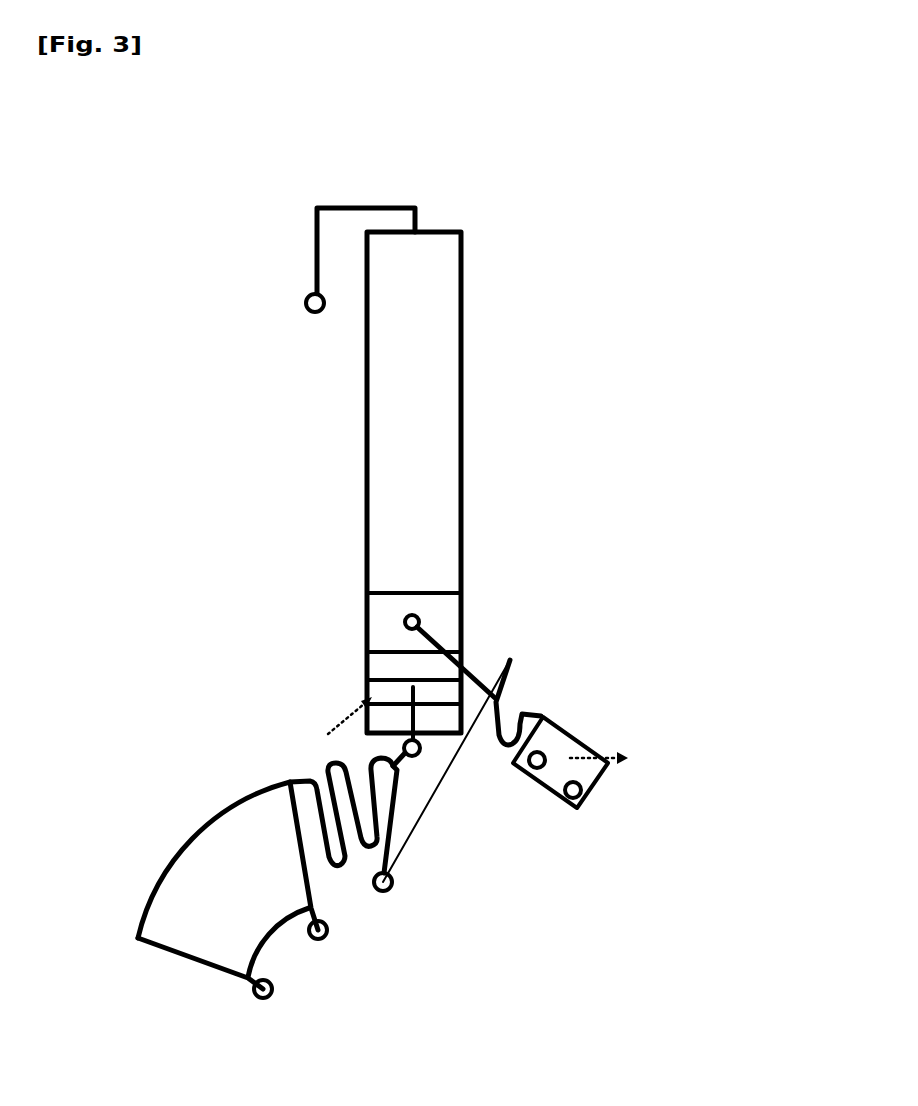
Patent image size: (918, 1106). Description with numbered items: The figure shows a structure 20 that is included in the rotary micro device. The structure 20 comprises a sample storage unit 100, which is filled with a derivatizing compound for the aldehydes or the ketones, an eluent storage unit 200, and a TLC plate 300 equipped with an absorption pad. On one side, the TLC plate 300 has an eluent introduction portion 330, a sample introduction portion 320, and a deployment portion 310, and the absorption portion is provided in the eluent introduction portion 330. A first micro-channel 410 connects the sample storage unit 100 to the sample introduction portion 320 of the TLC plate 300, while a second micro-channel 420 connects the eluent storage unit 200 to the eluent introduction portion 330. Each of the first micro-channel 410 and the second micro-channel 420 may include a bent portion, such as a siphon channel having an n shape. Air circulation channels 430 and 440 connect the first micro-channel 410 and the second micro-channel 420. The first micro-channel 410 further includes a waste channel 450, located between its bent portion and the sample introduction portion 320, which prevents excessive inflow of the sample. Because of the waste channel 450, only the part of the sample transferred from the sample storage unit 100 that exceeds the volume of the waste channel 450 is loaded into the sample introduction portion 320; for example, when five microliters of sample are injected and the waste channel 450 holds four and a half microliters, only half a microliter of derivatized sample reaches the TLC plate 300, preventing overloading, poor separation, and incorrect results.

The structure 20 is at (800, 188).
The sample storage unit 100 is at (605, 790).
The eluent storage unit 200 is at (163, 868).
The TLC plate 300 is at (245, 436).
The deployment portion 310 is at (350, 445).
The sample introduction portion 320 is at (350, 619).
The eluent introduction portion 330 is at (350, 691).
The first micro-channel 410 is at (523, 703).
The second micro-channel 420 is at (347, 863).
The air circulation channel 430 is at (460, 767).
The air circulation channel 440 is at (356, 200).
The waste channel 450 is at (510, 650).